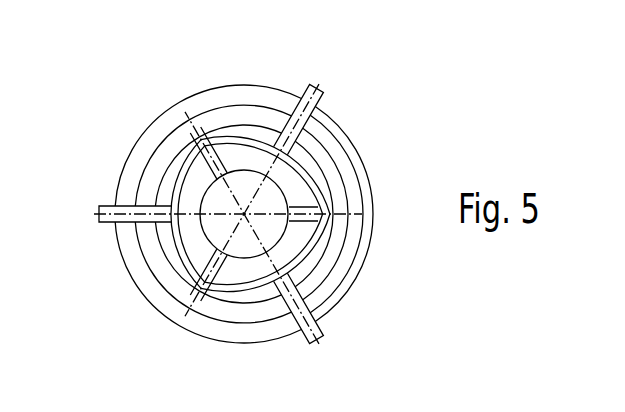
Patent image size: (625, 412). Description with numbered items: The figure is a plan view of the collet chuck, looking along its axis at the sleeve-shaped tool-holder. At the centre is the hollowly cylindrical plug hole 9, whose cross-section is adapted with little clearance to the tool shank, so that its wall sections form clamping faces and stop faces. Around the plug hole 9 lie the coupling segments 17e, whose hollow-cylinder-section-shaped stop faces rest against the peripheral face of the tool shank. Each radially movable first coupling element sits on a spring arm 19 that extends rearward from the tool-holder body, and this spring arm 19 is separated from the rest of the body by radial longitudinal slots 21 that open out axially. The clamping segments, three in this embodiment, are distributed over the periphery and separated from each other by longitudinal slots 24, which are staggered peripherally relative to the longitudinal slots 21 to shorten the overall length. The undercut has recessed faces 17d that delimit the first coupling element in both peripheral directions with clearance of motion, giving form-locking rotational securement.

The plug hole 9 is at (350, 147).
The spring arm 19 is at (314, 114).
The radial longitudinal slot 21 is at (208, 130).
The recessed face 17d is at (177, 150).
The coupling segment 17e is at (245, 146).
The longitudinal slot 24 is at (310, 90).